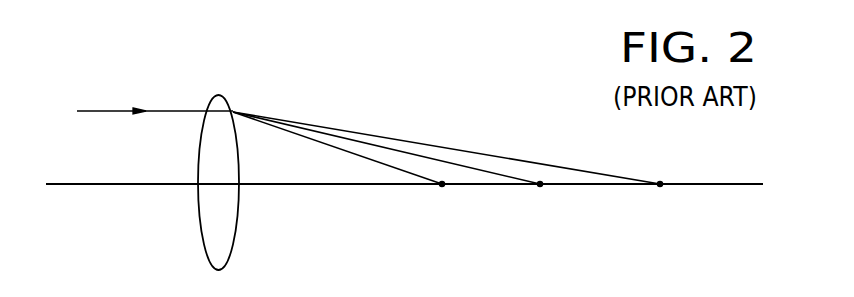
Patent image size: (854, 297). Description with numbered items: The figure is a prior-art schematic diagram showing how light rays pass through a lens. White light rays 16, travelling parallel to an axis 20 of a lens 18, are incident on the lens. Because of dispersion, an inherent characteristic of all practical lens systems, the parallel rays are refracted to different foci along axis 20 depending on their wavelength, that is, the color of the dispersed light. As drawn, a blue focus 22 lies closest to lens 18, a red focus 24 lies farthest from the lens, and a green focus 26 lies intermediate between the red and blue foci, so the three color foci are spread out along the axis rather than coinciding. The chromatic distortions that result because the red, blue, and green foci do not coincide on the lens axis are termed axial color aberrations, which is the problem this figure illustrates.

The white light rays 16 is at (167, 111).
The lens 18 is at (222, 247).
The axis 20 is at (80, 186).
The blue focus 22 is at (440, 186).
The red focus 24 is at (661, 186).
The green focus 26 is at (540, 186).